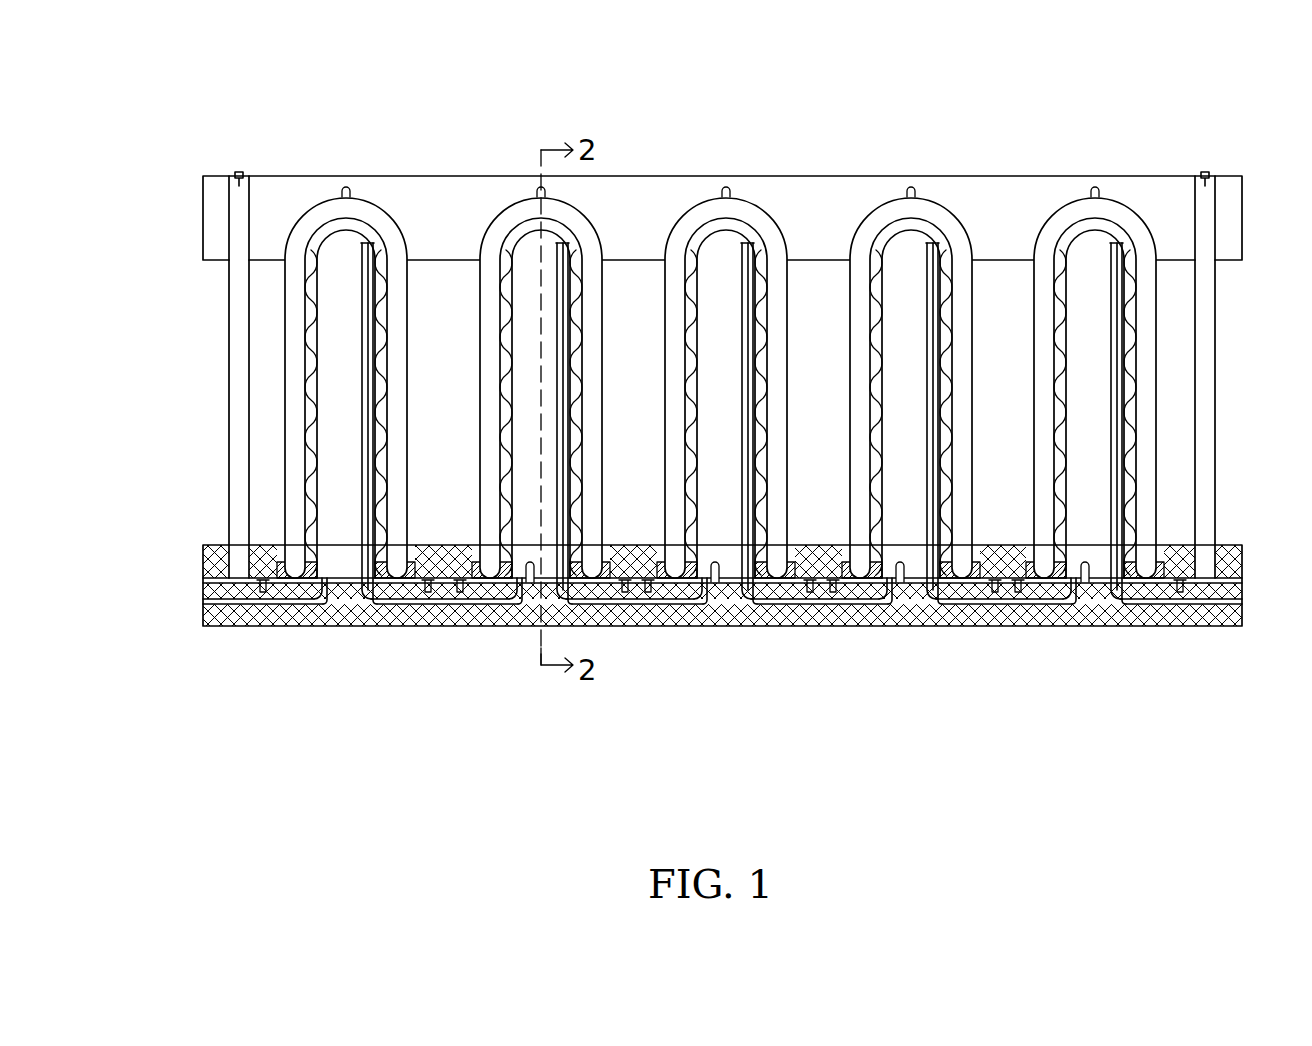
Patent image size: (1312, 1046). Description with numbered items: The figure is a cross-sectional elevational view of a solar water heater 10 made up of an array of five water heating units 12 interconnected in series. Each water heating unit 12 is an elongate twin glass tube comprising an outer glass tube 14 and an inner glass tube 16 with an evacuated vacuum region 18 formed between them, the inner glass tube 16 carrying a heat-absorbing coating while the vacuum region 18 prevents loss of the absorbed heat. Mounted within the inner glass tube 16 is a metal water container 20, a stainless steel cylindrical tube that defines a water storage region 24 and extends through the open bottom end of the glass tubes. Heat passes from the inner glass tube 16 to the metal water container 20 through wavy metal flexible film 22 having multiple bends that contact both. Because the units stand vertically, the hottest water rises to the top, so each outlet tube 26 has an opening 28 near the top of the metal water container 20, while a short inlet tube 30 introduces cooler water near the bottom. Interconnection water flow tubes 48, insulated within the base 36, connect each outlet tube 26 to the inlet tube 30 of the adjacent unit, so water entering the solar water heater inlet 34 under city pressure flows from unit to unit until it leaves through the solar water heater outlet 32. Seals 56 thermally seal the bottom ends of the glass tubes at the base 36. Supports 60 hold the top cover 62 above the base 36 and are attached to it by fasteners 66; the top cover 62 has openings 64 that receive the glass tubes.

The solar water heater 10 is at (1090, 97).
The water heating units 12 is at (849, 205).
The outer glass tube 14 is at (418, 350).
The inner glass tube 16 is at (497, 325).
The evacuated vacuum region 18 is at (490, 357).
The metal water container 20 is at (517, 393).
The metal flexible film 22 is at (510, 437).
The water storage region 24 is at (552, 492).
The outlet tube 26 is at (560, 518).
The opening 28 is at (560, 238).
The inlet tube 30 is at (720, 627).
The solar water heater outlet 32 is at (1245, 602).
The solar water heater inlet 34 is at (204, 604).
The base 36 is at (134, 592).
The interconnection water flow tubes 48 is at (970, 602).
The seals 56 is at (763, 583).
The supports 60 is at (232, 352).
The top cover 62 is at (284, 190).
The openings 64 is at (313, 205).
The fasteners 66 is at (237, 172).